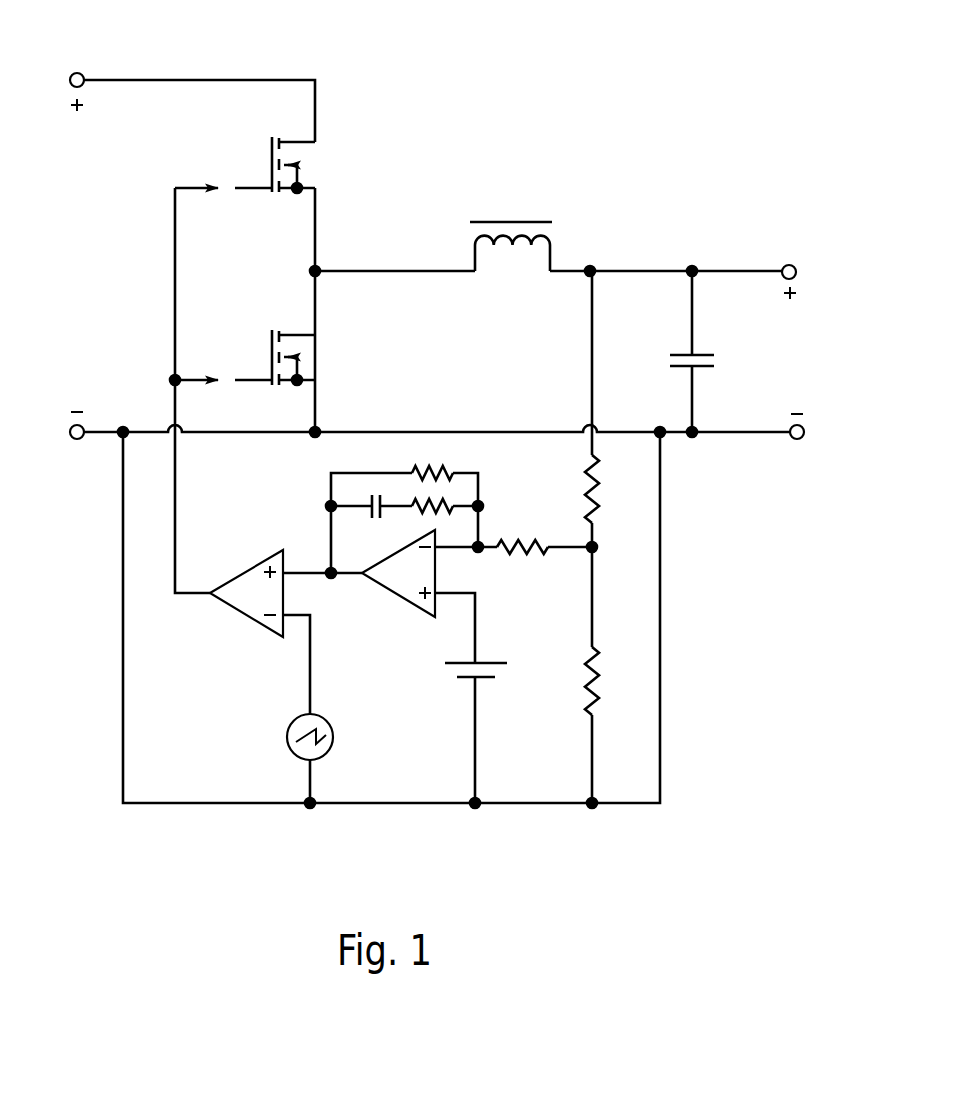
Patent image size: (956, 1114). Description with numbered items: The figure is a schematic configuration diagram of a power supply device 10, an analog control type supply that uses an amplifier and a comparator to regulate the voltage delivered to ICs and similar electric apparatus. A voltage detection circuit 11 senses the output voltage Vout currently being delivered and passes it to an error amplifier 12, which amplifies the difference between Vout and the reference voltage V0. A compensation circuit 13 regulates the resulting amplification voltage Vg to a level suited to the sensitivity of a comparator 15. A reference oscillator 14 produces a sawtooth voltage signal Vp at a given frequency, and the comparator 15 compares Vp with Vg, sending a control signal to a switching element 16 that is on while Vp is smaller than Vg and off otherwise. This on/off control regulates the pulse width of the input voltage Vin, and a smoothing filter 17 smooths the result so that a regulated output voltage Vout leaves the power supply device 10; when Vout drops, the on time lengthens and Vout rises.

The power supply device 10 is at (686, 128).
The voltage detection circuit 11 is at (540, 570).
The error amplifier 12 is at (398, 598).
The compensation circuit 13 is at (390, 491).
The reference oscillator 14 is at (298, 716).
The comparator 15 is at (238, 573).
The switching element 16 is at (316, 357).
The smoothing filter 17 is at (680, 346).